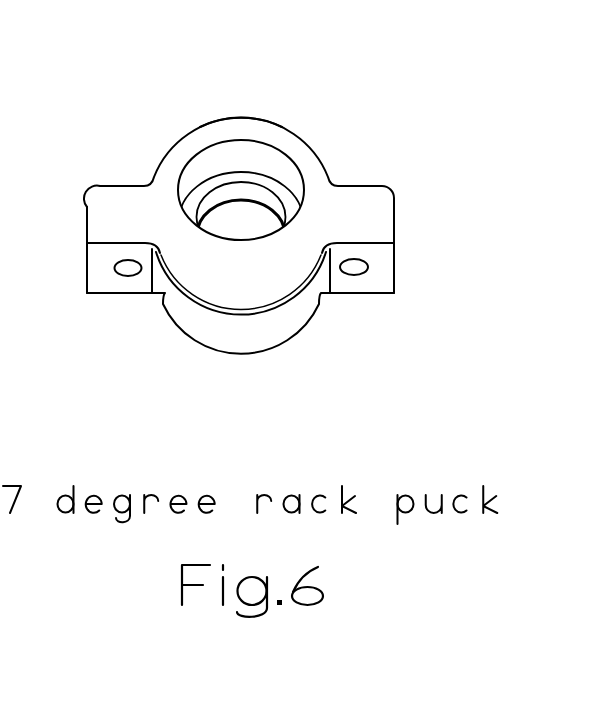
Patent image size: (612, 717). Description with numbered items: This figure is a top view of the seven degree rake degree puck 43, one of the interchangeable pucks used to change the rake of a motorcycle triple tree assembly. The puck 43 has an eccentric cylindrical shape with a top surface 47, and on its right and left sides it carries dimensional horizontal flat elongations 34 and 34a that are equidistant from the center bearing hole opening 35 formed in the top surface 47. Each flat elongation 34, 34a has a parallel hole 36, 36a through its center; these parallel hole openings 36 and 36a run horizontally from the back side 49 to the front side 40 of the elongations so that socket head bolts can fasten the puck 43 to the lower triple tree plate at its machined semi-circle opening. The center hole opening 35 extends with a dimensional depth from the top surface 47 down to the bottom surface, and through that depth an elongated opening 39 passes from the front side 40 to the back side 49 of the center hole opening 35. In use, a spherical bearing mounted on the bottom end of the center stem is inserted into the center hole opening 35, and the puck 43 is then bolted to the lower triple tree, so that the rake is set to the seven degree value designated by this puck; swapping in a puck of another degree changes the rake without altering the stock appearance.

The dimensional horizontal flat elongation 34 is at (87, 200).
The dimensional horizontal flat elongation 34a is at (394, 205).
The center bearing hole opening 35 is at (240, 139).
The parallel hole 36 is at (128, 277).
The parallel hole 36a is at (353, 276).
The elongated opening 39 is at (247, 200).
The front side 40 is at (100, 265).
The rake degree puck 43 is at (243, 314).
The top surface 47 is at (258, 286).
The back side 49 is at (273, 128).